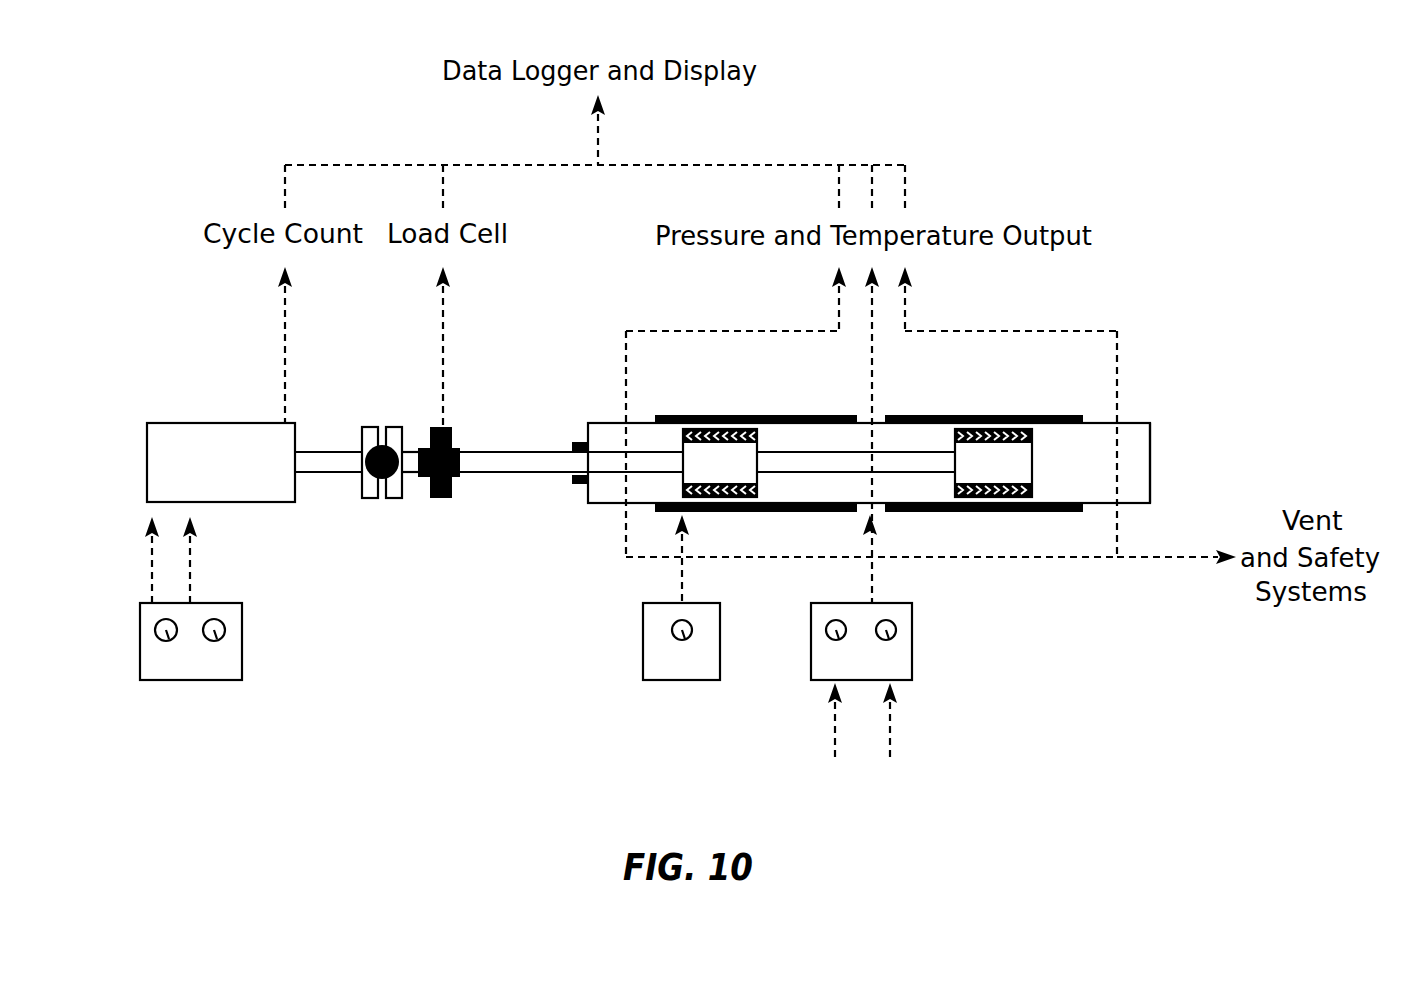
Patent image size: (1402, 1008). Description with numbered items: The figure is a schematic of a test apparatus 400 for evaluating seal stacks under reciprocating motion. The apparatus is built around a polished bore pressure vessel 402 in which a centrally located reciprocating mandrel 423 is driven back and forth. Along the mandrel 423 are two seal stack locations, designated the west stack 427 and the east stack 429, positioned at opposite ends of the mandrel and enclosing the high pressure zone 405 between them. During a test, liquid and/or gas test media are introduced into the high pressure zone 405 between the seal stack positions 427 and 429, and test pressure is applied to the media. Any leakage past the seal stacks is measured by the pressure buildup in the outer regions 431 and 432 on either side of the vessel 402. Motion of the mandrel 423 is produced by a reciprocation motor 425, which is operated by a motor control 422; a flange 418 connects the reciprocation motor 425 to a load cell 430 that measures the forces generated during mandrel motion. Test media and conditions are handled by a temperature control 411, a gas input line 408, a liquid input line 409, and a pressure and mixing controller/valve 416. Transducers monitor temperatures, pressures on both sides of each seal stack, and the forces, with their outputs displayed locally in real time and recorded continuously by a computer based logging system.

The test apparatus 400 is at (996, 119).
The polished bore pressure vessel 402 is at (1130, 459).
The high pressure zone 405 is at (807, 492).
The gas input line 408 is at (835, 745).
The liquid input line 409 is at (890, 745).
The temperature control 411 is at (643, 632).
The pressure and mixing controller/valve 416 is at (912, 660).
The flange 418 is at (386, 518).
The motor control 422 is at (140, 625).
The reciprocating mandrel 423 is at (908, 463).
The reciprocation motor 425 is at (192, 423).
The west stack seal stack location 427 is at (721, 345).
The east stack seal stack location 429 is at (1022, 345).
The load cell 430 is at (432, 502).
The leakage region 431 is at (605, 499).
The leakage region 432 is at (1143, 484).